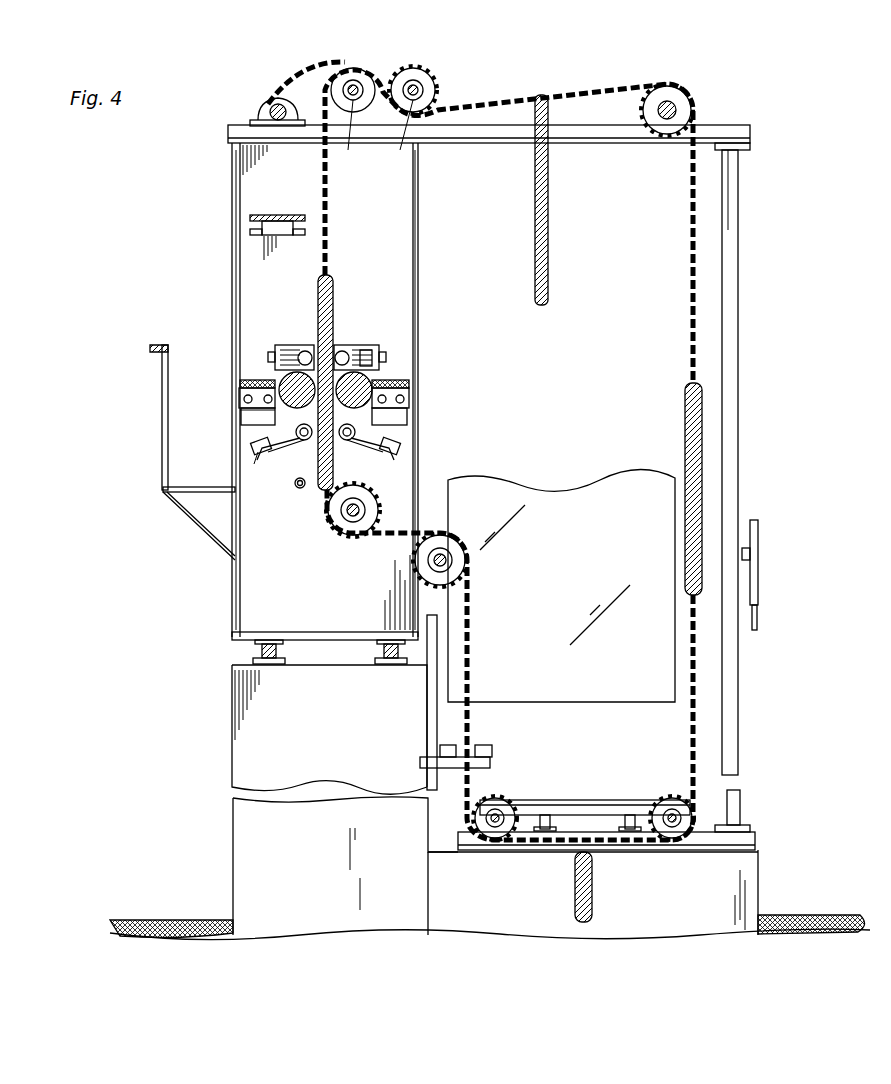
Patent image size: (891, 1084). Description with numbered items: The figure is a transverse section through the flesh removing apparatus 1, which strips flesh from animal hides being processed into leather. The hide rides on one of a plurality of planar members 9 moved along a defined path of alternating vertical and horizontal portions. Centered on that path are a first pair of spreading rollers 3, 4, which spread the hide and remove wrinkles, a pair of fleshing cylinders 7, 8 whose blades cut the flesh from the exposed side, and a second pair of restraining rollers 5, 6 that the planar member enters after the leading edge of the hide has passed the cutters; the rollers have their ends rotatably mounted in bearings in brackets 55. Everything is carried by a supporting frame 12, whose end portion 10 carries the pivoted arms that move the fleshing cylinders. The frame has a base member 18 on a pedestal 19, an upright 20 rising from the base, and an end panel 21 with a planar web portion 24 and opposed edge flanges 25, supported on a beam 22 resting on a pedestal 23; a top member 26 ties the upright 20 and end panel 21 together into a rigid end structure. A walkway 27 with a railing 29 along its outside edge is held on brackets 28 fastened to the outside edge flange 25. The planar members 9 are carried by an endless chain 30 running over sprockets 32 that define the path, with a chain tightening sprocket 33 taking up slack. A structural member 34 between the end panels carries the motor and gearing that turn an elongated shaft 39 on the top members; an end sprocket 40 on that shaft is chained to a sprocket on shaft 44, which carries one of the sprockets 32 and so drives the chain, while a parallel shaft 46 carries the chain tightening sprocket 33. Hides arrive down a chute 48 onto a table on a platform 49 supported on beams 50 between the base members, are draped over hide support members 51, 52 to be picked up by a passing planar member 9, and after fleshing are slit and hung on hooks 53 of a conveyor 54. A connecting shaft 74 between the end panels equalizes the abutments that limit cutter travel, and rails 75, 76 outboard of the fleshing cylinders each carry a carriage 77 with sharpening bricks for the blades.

The flesh removing apparatus 1 is at (770, 115).
The spreading roller 3 is at (305, 442).
The spreading roller 4 is at (347, 442).
The restraining roller 5 is at (305, 350).
The restraining roller 6 is at (343, 350).
The fleshing cylinder 7 is at (280, 378).
The fleshing cylinder 8 is at (370, 375).
The planar member 9 is at (333, 283).
The end portion 10 is at (262, 178).
The supporting frame 12 is at (750, 146).
The base member 18 is at (710, 850).
The pedestal 19 is at (752, 878).
The upright 20 is at (738, 356).
The end panel 21 is at (233, 268).
The beam 22 is at (256, 648).
The pedestal 23 is at (234, 742).
The planar web portion 24 is at (280, 598).
The edge flange 25 is at (418, 472).
The top member 26 is at (582, 140).
The walkway 27 is at (210, 486).
The bracket 28 is at (205, 540).
The railing 29 is at (160, 392).
The endless chain 30 is at (692, 272).
The sprocket 32 is at (356, 70).
The chain tightening sprocket 33 is at (437, 96).
The structural member 34 is at (250, 225).
The elongated shaft 39 is at (262, 100).
The end sprocket 40 is at (318, 82).
The shaft 44 is at (353, 100).
The shaft 46 is at (413, 100).
The chute 48 is at (600, 505).
The platform 49 is at (548, 800).
The beam 50 is at (603, 805).
The hide support member 51 is at (488, 752).
The hide support member 52 is at (460, 750).
The hook 53 is at (760, 620).
The conveyor 54 is at (760, 553).
The bracket 55 is at (366, 350).
The connecting shaft 74 is at (285, 345).
The rail 75 is at (240, 412).
The rail 76 is at (412, 402).
The carriage 77 is at (248, 380).